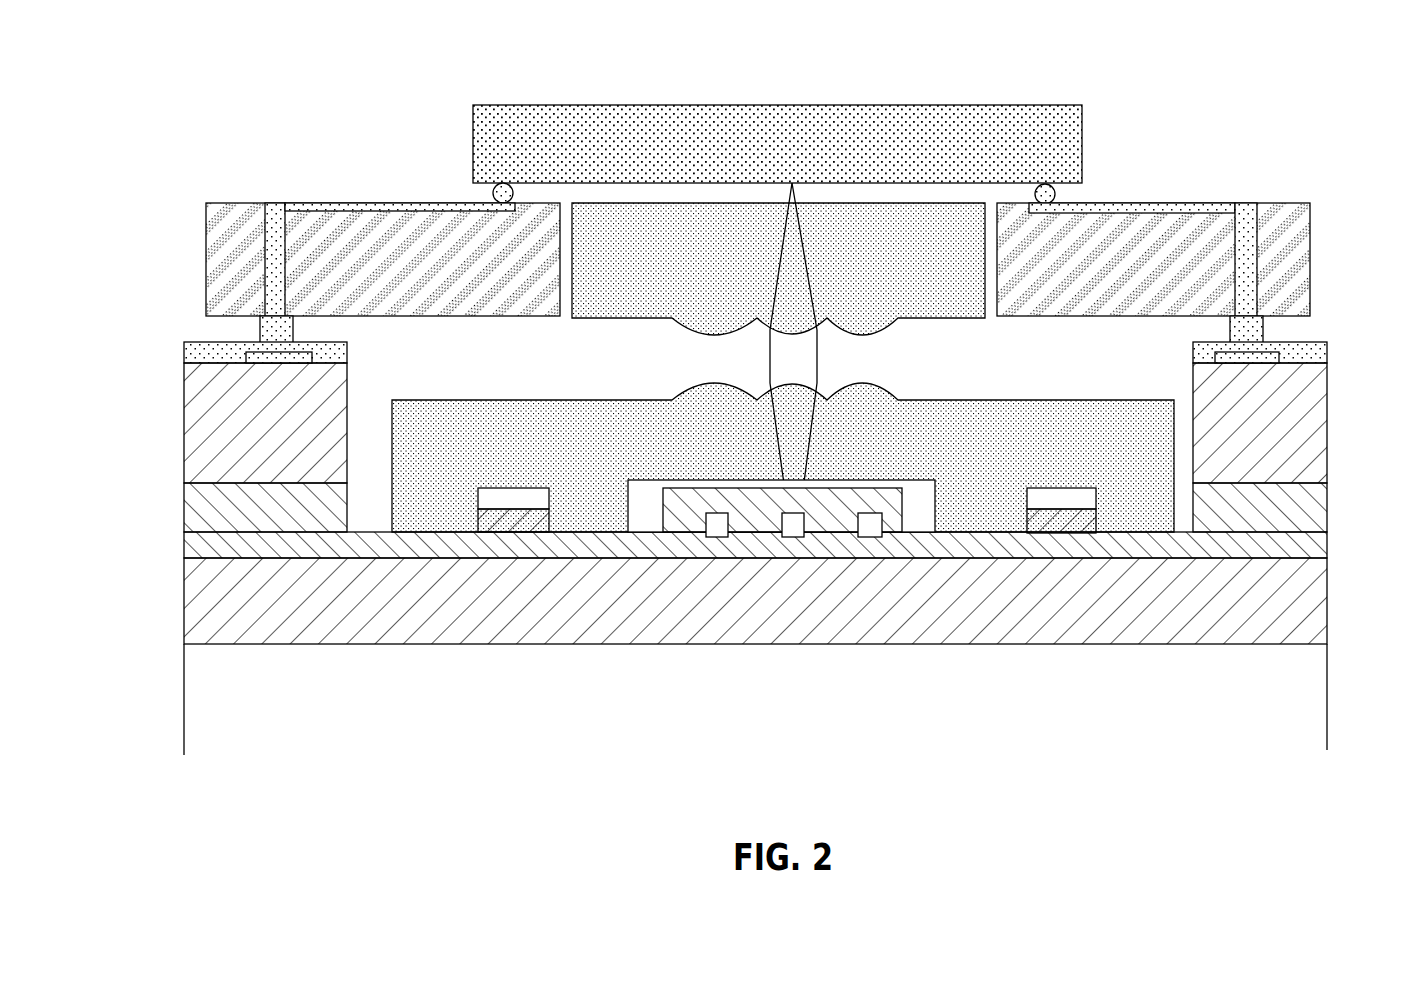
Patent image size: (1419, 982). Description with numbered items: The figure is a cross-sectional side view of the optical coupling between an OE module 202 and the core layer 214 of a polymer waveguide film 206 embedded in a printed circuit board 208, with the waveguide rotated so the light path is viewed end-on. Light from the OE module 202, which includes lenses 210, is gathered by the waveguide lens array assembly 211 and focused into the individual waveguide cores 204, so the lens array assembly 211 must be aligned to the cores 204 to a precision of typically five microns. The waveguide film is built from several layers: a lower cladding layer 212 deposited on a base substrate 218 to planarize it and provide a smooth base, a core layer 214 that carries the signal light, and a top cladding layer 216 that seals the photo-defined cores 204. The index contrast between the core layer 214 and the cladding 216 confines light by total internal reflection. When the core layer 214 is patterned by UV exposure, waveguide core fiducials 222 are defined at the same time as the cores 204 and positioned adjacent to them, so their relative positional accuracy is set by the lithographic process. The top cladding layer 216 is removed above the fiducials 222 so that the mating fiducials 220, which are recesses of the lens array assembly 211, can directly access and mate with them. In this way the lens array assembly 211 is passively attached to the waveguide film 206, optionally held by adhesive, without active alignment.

The OE module 202 is at (1082, 143).
The waveguide cores 204 is at (870, 537).
The polymer waveguide film 206 is at (1327, 533).
The printed circuit board 208 is at (1273, 714).
The lenses 210 is at (848, 200).
The waveguide lens array assembly 211 is at (950, 400).
The lower cladding layer 212 is at (190, 542).
The core layer 214 is at (703, 521).
The top cladding layer 216 is at (190, 500).
The base substrate 218 is at (190, 620).
The mating fiducials 220 is at (492, 495).
The waveguide core fiducials 222 is at (518, 522).